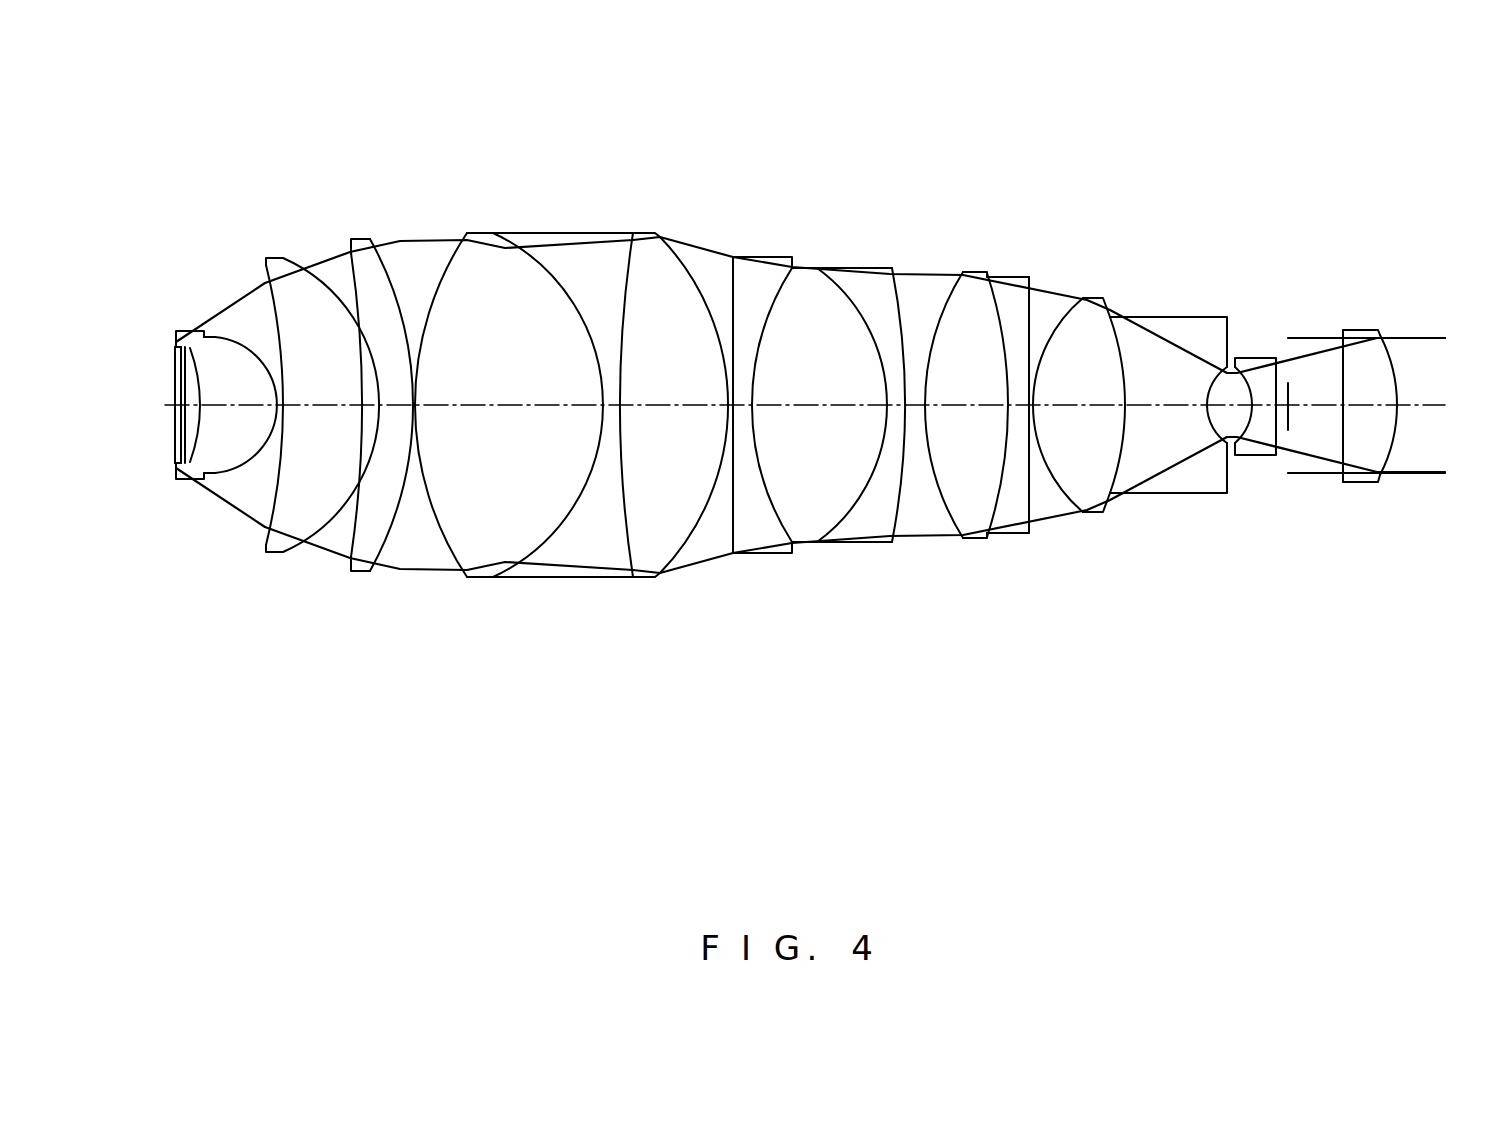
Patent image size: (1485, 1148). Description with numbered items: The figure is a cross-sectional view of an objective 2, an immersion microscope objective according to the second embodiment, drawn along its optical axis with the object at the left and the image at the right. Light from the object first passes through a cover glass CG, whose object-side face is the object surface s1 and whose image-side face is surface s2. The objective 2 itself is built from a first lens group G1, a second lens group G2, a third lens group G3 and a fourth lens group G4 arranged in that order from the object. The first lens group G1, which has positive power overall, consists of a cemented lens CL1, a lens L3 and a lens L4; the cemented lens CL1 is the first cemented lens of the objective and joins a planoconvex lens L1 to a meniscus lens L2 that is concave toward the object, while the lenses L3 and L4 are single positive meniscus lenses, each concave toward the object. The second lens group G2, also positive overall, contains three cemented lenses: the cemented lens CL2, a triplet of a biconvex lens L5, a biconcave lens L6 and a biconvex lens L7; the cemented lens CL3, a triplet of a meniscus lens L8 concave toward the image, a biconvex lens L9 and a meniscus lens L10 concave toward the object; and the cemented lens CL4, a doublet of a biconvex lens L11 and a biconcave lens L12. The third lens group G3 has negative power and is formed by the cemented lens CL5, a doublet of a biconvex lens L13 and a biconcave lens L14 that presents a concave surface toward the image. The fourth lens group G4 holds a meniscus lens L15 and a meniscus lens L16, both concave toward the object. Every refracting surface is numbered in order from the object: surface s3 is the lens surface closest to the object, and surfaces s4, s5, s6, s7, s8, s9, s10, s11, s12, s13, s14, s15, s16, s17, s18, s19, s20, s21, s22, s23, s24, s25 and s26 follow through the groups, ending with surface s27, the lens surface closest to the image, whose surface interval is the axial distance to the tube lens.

The objective 2 is at (1340, 66).
The cover glass CG is at (152, 416).
The object surface s1 is at (176, 390).
The image-side surface of cover glass s2 is at (182, 365).
The object-side lens surface s3 is at (184, 360).
The fourth surface s4 is at (195, 385).
The fifth surface s5 is at (222, 345).
The sixth surface s6 is at (277, 345).
The seventh surface s7 is at (332, 320).
The eighth surface s8 is at (359, 330).
The ninth surface s9 is at (407, 330).
The tenth surface s10 is at (421, 350).
The eleventh surface s11 is at (552, 275).
The twelfth surface s12 is at (627, 283).
The thirteenth surface s13 is at (693, 285).
The fourteenth surface s14 is at (732, 290).
The fifteenth surface s15 is at (774, 293).
The sixteenth surface s16 is at (856, 322).
The seventeenth surface s17 is at (903, 322).
The eighteenth surface s18 is at (945, 302).
The nineteenth surface s19 is at (998, 312).
The twentieth surface s20 is at (1030, 323).
The twenty-first surface s21 is at (1065, 318).
The twenty-second surface s22 is at (1118, 343).
The twenty-third surface s23 is at (1214, 387).
The twenty-fourth surface s24 is at (1241, 383).
The twenty-fifth surface (aperture stop) s25 is at (1288, 373).
The twenty-sixth surface s26 is at (1340, 377).
The image-side lens surface s27 is at (1397, 367).
The lens L1 is at (197, 462).
The lens L2 is at (240, 426).
The lens L3 is at (322, 427).
The lens L4 is at (391, 413).
The lens L5 is at (509, 412).
The lens L6 is at (563, 436).
The lens L7 is at (680, 414).
The lens L8 is at (748, 426).
The lens L9 is at (846, 423).
The lens L10 is at (878, 438).
The lens L11 is at (971, 420).
The lens L12 is at (1027, 437).
The lens L13 is at (1111, 443).
The lens L14 is at (1170, 474).
The lens L15 is at (1263, 458).
The lens L16 is at (1390, 473).
The cemented lens CL1 is at (175, 705).
The cemented lens CL2 is at (682, 705).
The cemented lens CL3 is at (720, 705).
The cemented lens CL4 is at (1055, 705).
The cemented lens CL5 is at (1075, 705).
The first lens group G1 is at (175, 752).
The second lens group G2 is at (448, 752).
The third lens group G3 is at (1197, 752).
The fourth lens group G4 is at (1237, 752).